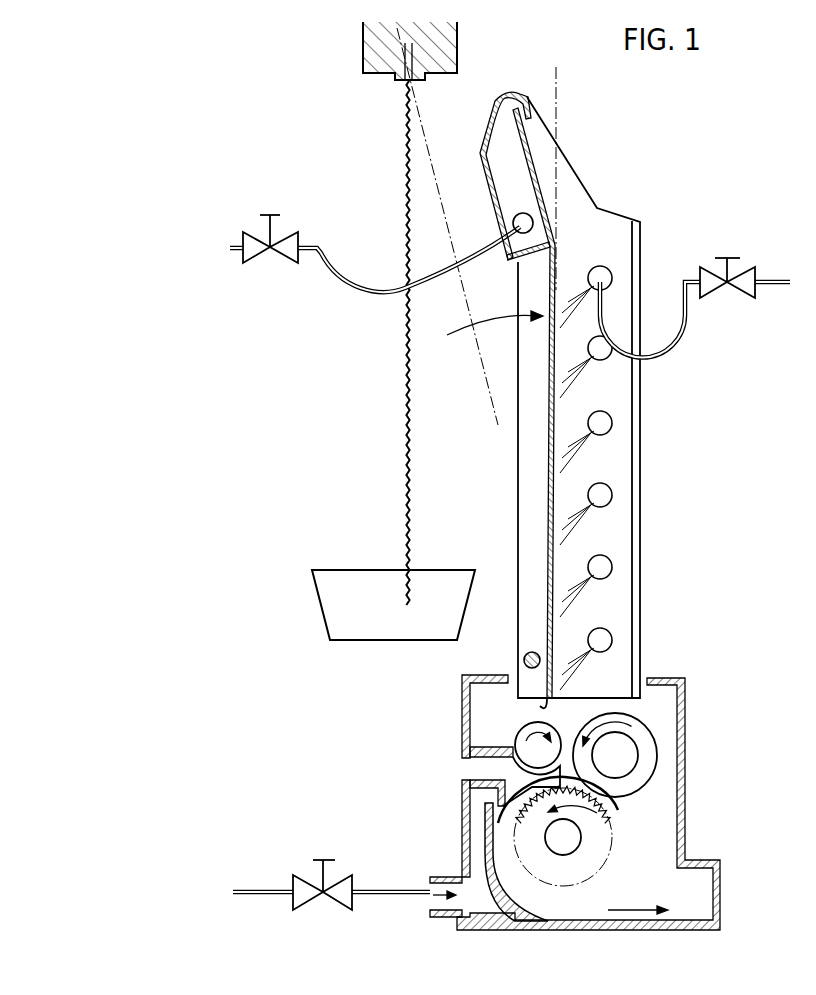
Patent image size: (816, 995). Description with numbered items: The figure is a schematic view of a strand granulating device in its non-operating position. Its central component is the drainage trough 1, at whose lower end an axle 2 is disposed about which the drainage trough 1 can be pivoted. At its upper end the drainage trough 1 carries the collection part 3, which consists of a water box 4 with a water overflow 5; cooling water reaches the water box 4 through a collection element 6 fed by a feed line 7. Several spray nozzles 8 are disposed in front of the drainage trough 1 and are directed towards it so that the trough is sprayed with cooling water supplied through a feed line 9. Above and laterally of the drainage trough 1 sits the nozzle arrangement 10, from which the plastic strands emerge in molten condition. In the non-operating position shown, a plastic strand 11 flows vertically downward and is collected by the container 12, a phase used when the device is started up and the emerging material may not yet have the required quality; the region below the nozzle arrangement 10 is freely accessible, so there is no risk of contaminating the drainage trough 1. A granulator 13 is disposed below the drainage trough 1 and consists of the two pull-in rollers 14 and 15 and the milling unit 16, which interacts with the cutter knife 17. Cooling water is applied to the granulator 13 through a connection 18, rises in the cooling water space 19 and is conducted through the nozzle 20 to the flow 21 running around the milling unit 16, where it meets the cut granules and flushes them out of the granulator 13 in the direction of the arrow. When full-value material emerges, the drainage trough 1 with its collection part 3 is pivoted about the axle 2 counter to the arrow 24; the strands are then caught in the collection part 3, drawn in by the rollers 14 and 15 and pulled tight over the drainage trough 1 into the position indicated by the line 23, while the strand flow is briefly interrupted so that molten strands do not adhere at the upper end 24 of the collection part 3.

The drainage trough 1 is at (554, 452).
The axle 2 is at (524, 657).
The collection part 3 is at (542, 183).
The water box 4 is at (497, 176).
The water overflow 5 is at (528, 126).
The collection element 6 is at (514, 222).
The feed line 7 is at (432, 289).
The spray nozzles 8 is at (612, 423).
The feed line 9 is at (680, 333).
The nozzle arrangement 10 is at (457, 54).
The plastic strand 11 is at (405, 394).
The container 12 is at (372, 583).
The granulator 13 is at (698, 760).
The pull-in roller 14 is at (526, 736).
The pull-in roller 15 is at (648, 748).
The milling unit 16 is at (605, 840).
The cutter knife 17 is at (618, 810).
The connection 18 is at (452, 878).
The cooling water space 19 is at (472, 828).
The nozzle 20 is at (468, 768).
The flow 21 is at (520, 893).
The line 23 is at (428, 157).
The arrow 24 is at (510, 92).